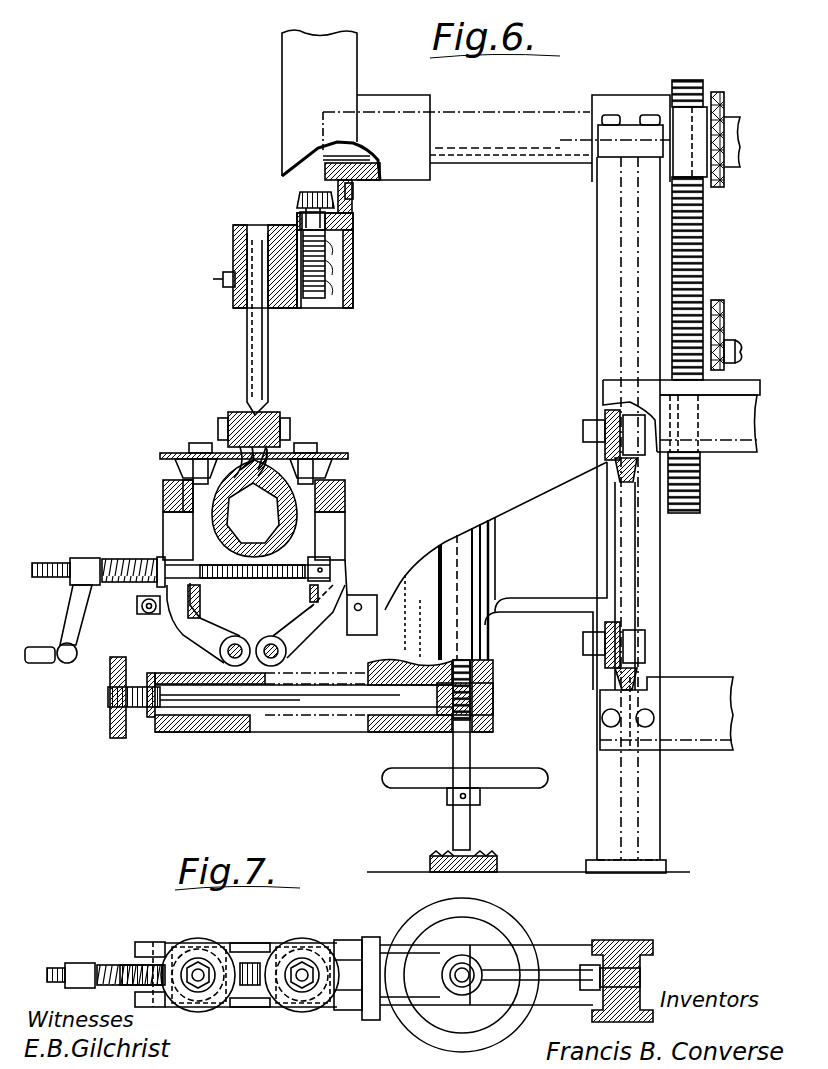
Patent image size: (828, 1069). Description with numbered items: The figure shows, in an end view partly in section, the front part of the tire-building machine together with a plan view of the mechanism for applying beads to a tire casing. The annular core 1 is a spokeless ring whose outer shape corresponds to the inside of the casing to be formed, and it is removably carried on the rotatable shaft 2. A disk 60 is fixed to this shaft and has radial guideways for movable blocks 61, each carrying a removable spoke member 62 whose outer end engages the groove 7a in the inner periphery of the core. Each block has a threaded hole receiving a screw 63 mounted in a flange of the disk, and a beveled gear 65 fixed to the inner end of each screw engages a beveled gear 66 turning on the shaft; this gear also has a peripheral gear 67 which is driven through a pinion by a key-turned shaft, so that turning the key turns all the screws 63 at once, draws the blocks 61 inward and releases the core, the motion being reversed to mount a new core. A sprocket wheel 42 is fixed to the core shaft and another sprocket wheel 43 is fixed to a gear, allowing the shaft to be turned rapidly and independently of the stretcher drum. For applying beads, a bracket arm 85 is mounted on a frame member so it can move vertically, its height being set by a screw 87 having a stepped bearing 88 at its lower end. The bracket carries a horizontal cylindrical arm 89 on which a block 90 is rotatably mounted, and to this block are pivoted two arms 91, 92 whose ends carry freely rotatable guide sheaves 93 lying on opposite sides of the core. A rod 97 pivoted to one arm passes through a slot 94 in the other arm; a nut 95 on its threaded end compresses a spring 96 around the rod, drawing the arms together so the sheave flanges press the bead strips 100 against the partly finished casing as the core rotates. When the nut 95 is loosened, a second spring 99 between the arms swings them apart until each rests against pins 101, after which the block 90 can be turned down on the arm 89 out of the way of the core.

In FIG. 6, the annular core 1 is at (254, 508).
In FIG. 6, the rotatable shaft 2 is at (500, 112).
In FIG. 6, the arm 7a is at (265, 420).
In FIG. 6, the sprocket wheel 42 is at (716, 92).
In FIG. 6, the sprocket wheel 43 is at (716, 322).
In FIG. 6, the disk 60 is at (319, 103).
In FIG. 6, the movable block 61 is at (254, 230).
In FIG. 6, the spoke member 62 is at (247, 335).
In FIG. 6, the screw 63 is at (327, 262).
In FIG. 6, the beveled gear 65 is at (298, 197).
In FIG. 6, the beveled gear 66 is at (354, 190).
In FIG. 6, the peripheral gear 67 is at (354, 216).
In FIG. 6, the bracket arm 85 is at (496, 576).
In FIG. 7, the bracket arm 85 is at (556, 953).
In FIG. 6, the screw 87 is at (494, 690).
In FIG. 7, the screw 87 is at (462, 985).
In FIG. 6, the stepped bearing 88 is at (470, 858).
In FIG. 6, the horizontal cylindrical arm 89 is at (400, 724).
In FIG. 6, the block 90 is at (300, 708).
In FIG. 7, the block 90 is at (353, 942).
In FIG. 6, the arm 91 is at (340, 537).
In FIG. 7, the arm 91 is at (255, 987).
In FIG. 6, the arm 92 is at (163, 519).
In FIG. 7, the arm 92 is at (248, 946).
In FIG. 6, the guide sheave 93 is at (175, 460).
In FIG. 7, the guide sheave 93 is at (197, 938).
In FIG. 6, the slot 94 is at (178, 582).
In FIG. 6, the nut 95 is at (76, 591).
In FIG. 7, the nut 95 is at (72, 965).
In FIG. 6, the spring 96 is at (110, 559).
In FIG. 7, the spring 96 is at (110, 965).
In FIG. 6, the rod 97 is at (122, 583).
In FIG. 6, the spring 99 is at (248, 583).
In FIG. 6, the bead strip 100 is at (226, 446).
In FIG. 6, the pin 101 is at (332, 571).